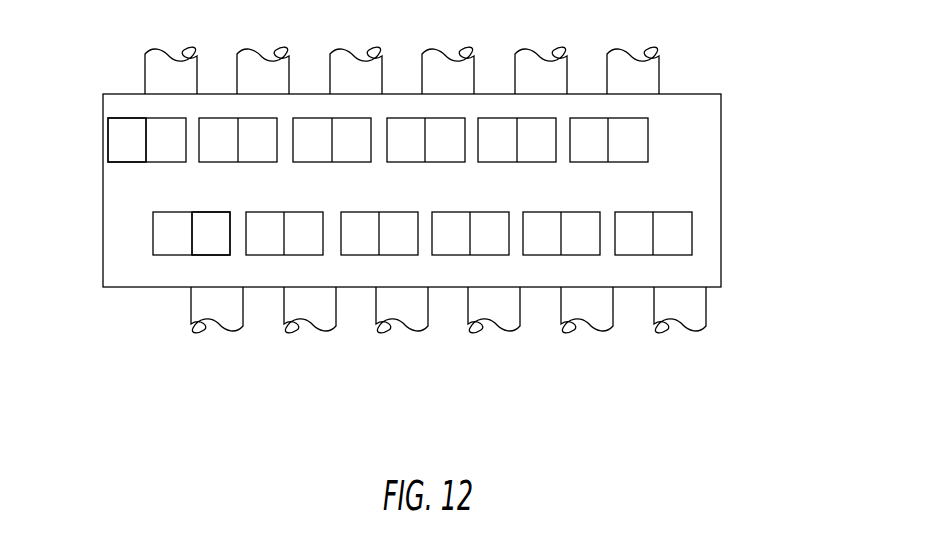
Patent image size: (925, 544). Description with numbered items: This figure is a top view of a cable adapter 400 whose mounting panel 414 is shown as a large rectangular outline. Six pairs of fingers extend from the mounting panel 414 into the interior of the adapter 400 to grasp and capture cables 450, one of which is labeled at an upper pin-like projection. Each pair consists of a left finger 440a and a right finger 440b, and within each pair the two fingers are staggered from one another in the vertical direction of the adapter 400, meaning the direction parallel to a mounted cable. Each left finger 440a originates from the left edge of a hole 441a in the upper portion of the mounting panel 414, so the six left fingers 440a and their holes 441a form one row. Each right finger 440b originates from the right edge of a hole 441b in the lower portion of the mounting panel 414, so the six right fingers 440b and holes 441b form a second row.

The adapter 400 is at (740, 208).
The mounting panel 414 is at (697, 170).
The left finger 440a is at (177, 255).
The right finger 440b is at (171, 118).
The hole 441a is at (213, 240).
The hole 441b is at (118, 141).
The cable 450 is at (150, 77).